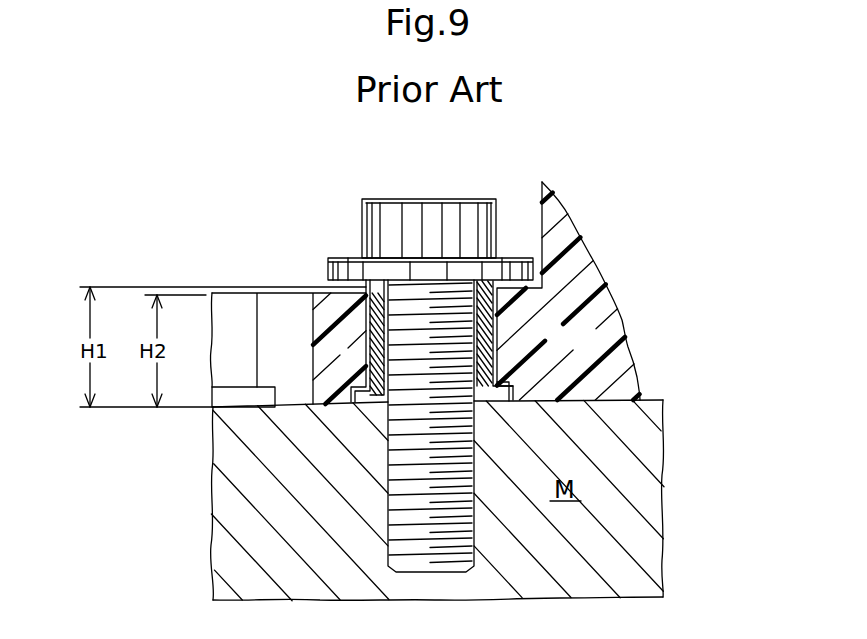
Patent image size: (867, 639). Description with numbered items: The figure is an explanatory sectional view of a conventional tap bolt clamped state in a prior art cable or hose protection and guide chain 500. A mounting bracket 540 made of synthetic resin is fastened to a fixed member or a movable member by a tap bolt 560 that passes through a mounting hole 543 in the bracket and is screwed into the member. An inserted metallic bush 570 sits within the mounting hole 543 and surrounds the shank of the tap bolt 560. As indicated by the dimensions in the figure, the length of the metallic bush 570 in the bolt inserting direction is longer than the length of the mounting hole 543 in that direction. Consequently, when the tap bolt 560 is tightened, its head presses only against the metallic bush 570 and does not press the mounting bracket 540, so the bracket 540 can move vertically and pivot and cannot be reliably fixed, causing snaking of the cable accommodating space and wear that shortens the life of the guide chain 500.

The cable/hose protection and guide chain 500 is at (684, 294).
The mounting bracket 540 is at (594, 350).
The mounting hole 543 is at (377, 310).
The tap bolt 560 is at (531, 163).
The metallic bush 570 is at (346, 361).